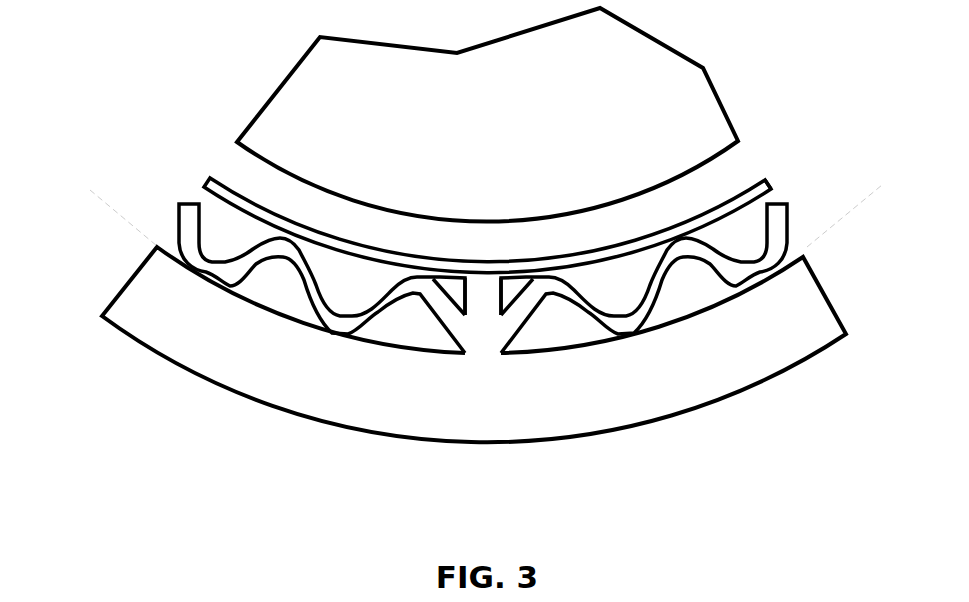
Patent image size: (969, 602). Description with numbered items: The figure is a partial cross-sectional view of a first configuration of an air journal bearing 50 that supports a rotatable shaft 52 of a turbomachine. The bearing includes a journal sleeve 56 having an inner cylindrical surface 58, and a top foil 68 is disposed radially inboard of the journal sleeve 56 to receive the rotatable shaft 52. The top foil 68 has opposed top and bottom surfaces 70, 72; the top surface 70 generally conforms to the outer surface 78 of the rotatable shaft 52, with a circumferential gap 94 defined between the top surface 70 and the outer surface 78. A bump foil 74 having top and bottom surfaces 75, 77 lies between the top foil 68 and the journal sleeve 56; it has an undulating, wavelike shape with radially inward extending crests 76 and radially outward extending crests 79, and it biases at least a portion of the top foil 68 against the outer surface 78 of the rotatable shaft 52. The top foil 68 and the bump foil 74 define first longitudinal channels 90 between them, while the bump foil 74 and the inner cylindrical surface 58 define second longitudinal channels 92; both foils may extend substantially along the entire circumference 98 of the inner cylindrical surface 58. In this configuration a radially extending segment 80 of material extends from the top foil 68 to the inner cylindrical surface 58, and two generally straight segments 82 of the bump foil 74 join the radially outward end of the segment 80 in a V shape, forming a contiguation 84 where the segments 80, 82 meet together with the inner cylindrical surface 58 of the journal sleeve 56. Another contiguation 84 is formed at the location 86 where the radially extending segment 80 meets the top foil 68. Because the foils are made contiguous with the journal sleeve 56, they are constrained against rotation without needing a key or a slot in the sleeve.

The air journal bearing 50 is at (158, 42).
The rotatable shaft 52 is at (470, 104).
The journal sleeve 56 is at (820, 300).
The inner cylindrical surface 58 is at (618, 297).
The top foil 68 is at (765, 178).
The top surface 70 is at (744, 188).
The bottom surface 72 is at (760, 192).
The bump foil 74 is at (187, 208).
The top surface 75 is at (373, 303).
The radially inward extending crests 76 is at (570, 300).
The bottom surface 77 is at (393, 328).
The outer surface 78 is at (642, 197).
The radially outward extending crests 79 is at (340, 330).
The radially extending segment 80 is at (450, 277).
The segments of the bump foil 82 is at (452, 320).
The contiguation 84 is at (488, 517).
The location 86 is at (483, 272).
The first longitudinal channels 90 is at (618, 302).
The second longitudinal channels 92 is at (273, 287).
The circumferential gap 94 is at (228, 163).
The circumference 98 is at (106, 207).